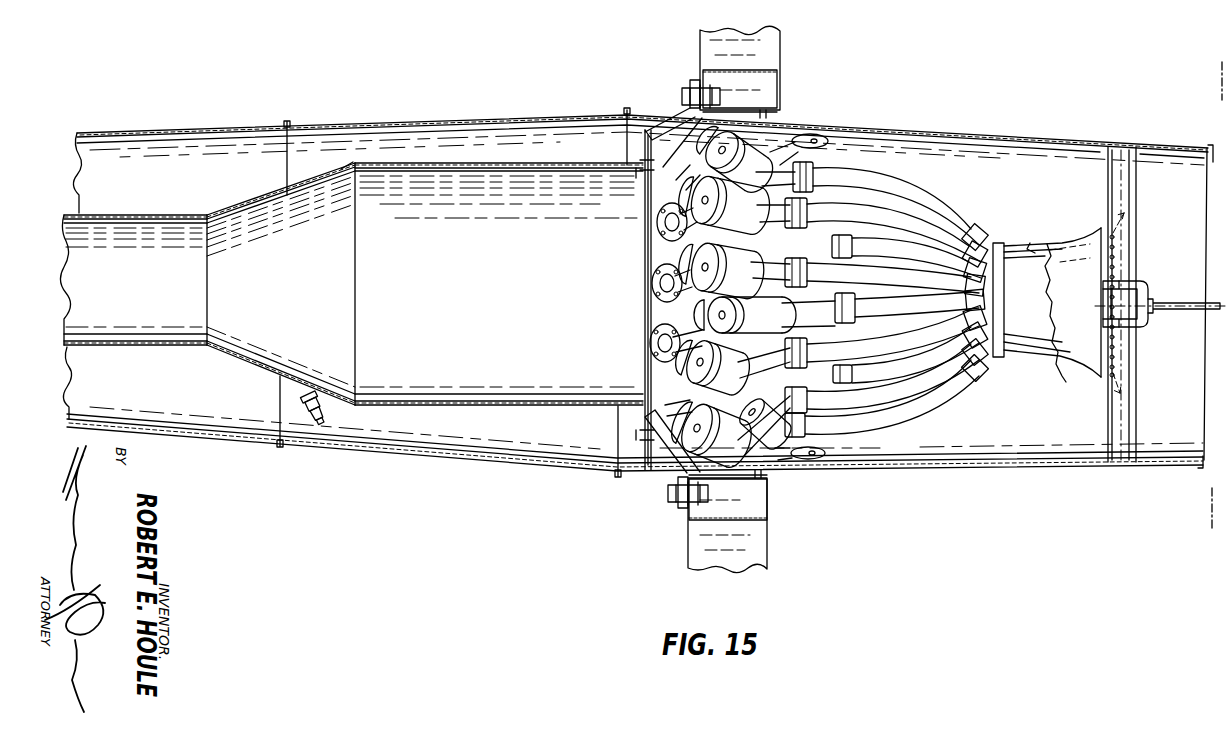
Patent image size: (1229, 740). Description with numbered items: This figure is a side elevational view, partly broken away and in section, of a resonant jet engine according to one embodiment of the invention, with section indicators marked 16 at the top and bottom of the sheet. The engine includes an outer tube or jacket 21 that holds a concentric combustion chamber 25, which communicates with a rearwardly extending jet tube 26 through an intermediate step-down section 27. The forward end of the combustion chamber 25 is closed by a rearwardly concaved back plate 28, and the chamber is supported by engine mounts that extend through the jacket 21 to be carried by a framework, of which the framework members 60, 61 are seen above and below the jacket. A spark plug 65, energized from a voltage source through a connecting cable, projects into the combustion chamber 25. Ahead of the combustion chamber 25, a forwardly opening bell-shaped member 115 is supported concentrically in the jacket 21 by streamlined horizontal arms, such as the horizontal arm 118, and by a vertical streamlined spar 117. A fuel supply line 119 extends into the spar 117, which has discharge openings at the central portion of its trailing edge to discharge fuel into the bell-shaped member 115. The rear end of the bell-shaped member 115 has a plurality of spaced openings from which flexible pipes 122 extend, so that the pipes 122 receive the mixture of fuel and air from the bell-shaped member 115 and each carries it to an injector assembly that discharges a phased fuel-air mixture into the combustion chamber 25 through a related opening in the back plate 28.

The outer tube or jacket 21 is at (510, 462).
The combustion chamber 25 is at (468, 408).
The jet tube 26 is at (113, 346).
The intermediate step-down section 27 is at (243, 364).
The back plate 28 is at (652, 381).
The framework 60 is at (783, 73).
The framework 61 is at (768, 509).
The spark plug 65 is at (317, 420).
The bell-shaped member 115 is at (1043, 353).
The vertical streamlined spar 117 is at (1134, 194).
The horizontal arm 118 is at (1104, 302).
The fuel supply line 119 is at (1184, 308).
The flexible pipes 122 is at (863, 427).
The section line 16- 16 is at (1194, 530).